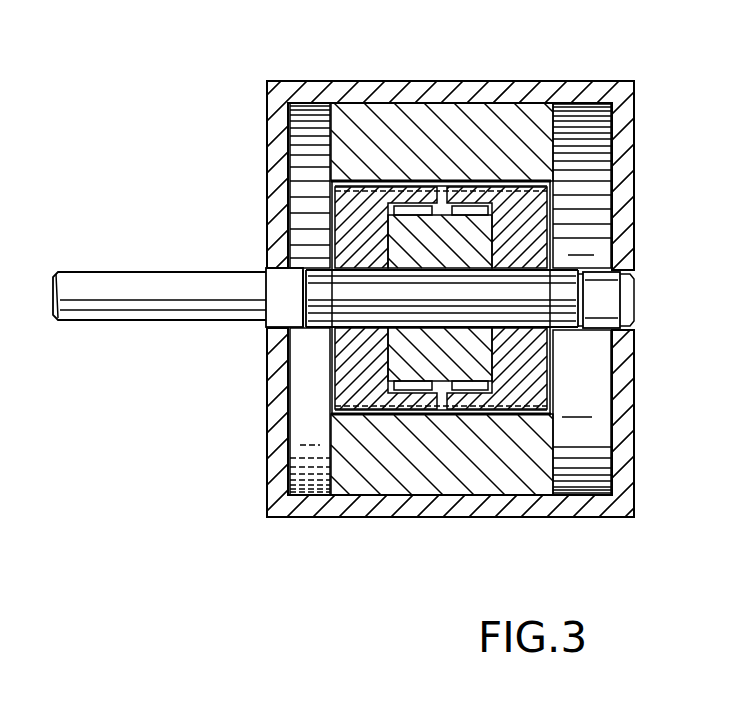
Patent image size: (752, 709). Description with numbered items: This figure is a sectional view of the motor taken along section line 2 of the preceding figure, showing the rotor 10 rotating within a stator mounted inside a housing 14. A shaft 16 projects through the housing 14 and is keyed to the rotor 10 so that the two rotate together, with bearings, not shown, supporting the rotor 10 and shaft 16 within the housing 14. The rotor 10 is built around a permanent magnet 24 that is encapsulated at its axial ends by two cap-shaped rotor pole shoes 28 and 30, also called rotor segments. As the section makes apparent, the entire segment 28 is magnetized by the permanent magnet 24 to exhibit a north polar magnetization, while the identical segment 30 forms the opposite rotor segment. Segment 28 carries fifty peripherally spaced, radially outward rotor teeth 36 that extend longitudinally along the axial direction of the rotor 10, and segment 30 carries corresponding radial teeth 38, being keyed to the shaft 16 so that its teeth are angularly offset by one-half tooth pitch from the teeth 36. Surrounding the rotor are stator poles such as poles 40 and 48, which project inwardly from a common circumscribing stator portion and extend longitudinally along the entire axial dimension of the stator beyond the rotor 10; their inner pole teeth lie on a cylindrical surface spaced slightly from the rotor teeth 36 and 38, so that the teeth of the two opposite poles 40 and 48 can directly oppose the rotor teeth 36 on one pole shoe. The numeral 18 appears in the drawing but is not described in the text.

The section line 2- 2 is at (354, 5).
The rotor 10 is at (487, 419).
The housing 14 is at (490, 94).
The shaft 16 is at (143, 280).
The stator core 18 is at (412, 193).
The permanent magnet 24 is at (470, 226).
The rotor pole shoe 28 is at (370, 195).
The rotor pole shoe 30 is at (458, 200).
The rotor teeth 36 is at (393, 188).
The rotor teeth 38 is at (505, 190).
The stator pole 40 is at (388, 112).
The stator pole 48 is at (355, 488).